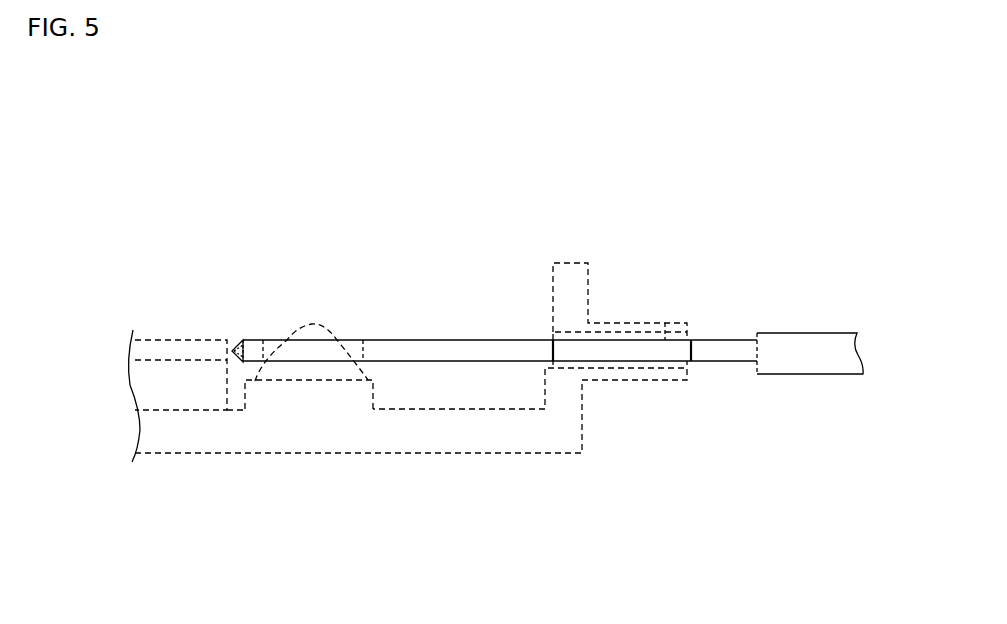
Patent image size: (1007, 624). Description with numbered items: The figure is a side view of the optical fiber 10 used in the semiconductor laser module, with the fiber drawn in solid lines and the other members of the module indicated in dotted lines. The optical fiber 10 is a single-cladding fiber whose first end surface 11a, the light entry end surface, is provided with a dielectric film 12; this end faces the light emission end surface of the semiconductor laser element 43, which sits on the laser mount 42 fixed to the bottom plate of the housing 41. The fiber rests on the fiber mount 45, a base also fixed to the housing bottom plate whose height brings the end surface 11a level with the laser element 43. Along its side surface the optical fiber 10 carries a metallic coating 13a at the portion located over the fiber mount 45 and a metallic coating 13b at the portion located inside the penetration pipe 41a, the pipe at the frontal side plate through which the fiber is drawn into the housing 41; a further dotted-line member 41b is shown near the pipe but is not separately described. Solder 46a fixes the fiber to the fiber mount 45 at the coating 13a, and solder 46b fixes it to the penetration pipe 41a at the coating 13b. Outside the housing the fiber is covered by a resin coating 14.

The optical fiber 10 is at (443, 350).
The first end surface 11a is at (238, 351).
The dielectric film 12 is at (236, 342).
The metallic coating 13a is at (312, 350).
The metallic coating 13b is at (633, 352).
The resin coating 14 is at (812, 376).
The housing 41 is at (430, 447).
The penetration pipe 41a is at (666, 326).
The holder projection 41b is at (618, 332).
The laser mount 42 is at (132, 383).
The semiconductor laser element 43 is at (154, 338).
The fiber mount 45 is at (308, 406).
The solder 46a is at (340, 332).
The solder 46b is at (688, 364).